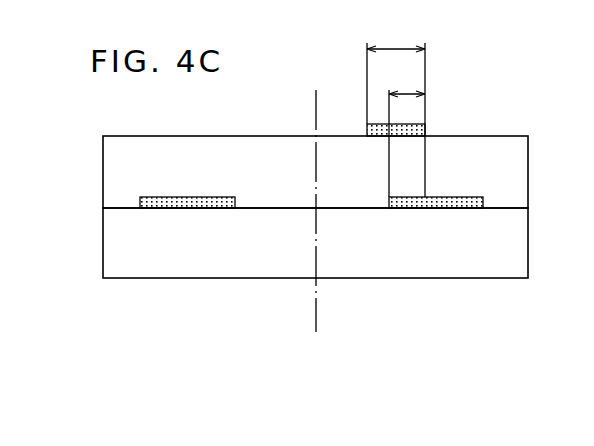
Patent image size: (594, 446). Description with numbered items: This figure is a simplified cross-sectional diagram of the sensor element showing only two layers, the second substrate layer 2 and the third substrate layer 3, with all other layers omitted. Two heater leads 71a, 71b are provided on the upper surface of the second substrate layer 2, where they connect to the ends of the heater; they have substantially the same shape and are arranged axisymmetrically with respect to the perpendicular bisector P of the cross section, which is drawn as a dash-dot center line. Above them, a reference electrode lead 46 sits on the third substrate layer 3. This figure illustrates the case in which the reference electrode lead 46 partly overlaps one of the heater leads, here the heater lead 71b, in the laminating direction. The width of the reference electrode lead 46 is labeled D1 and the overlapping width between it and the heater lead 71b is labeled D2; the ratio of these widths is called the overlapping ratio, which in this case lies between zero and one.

The third substrate layer 3 is at (515, 186).
The second substrate layer 2 is at (515, 251).
The reference electrode lead 46 is at (427, 128).
The heater lead 71a is at (193, 197).
The heater lead 71b is at (431, 197).
The width of the reference electrode lead D1 is at (396, 106).
The overlapping width D2 is at (410, 129).
The perpendicular bisector P is at (318, 314).